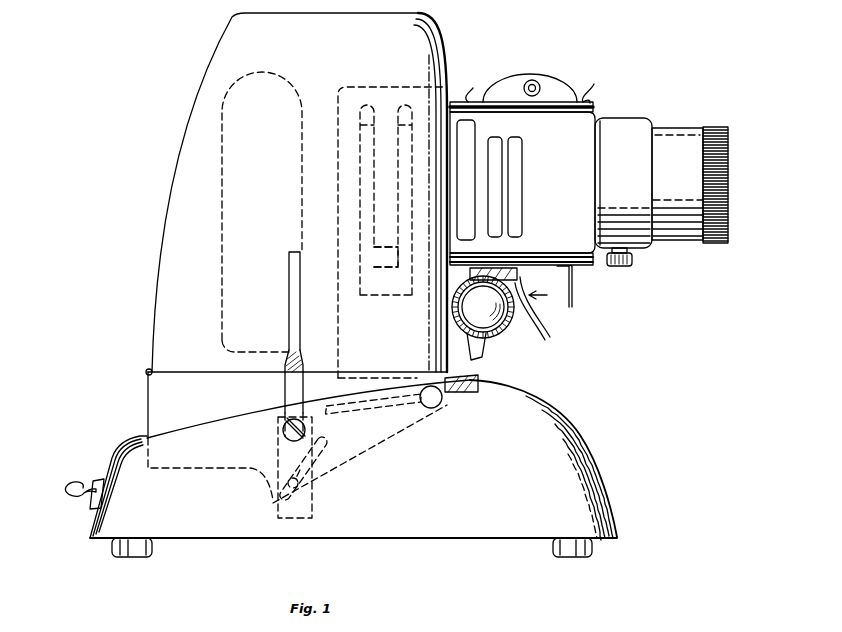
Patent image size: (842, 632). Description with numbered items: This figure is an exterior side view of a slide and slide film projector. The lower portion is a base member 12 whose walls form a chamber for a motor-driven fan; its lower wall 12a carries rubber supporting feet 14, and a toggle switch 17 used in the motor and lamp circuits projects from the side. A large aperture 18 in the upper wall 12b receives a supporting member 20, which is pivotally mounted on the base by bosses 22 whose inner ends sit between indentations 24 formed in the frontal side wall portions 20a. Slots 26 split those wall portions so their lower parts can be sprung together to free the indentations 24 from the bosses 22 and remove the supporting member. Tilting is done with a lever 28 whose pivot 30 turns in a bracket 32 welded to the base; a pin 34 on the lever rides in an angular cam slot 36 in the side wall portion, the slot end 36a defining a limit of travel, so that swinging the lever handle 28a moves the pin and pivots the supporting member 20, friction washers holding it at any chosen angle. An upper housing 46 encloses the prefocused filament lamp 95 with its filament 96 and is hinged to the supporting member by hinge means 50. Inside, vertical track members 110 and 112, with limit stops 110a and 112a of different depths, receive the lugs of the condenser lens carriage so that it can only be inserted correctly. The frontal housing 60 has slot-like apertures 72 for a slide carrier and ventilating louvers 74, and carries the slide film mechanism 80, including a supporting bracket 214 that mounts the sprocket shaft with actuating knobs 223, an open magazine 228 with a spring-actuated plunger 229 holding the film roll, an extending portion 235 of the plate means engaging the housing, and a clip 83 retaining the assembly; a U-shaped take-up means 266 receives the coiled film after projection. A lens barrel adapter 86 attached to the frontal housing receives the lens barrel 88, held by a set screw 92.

The base member 12 is at (277, 487).
The lower wall 12a is at (413, 541).
The upper wall 12b is at (557, 399).
The supporting feet 14 is at (594, 548).
The toggle switch 17 is at (74, 487).
The aperture 18 is at (143, 430).
The supporting member 20 is at (148, 394).
The frontal side wall portions 20a is at (388, 448).
The bosses 22 is at (443, 400).
The indentations 24 is at (470, 378).
The slots 26 is at (350, 406).
The lever 28 is at (284, 394).
The lever handle 28a is at (288, 283).
The pivot 30 is at (283, 434).
The bracket 32 is at (313, 512).
The pin 34 is at (302, 479).
The angular cam slot 36 is at (328, 448).
The slot end 36a is at (320, 457).
The upper housing 46 is at (157, 293).
The hinge means 50 is at (149, 370).
The frontal housing 60 is at (522, 183).
The slot-like apertures 72 is at (468, 240).
The louvers 74 is at (516, 216).
The slide film mechanism 80 is at (548, 295).
The clip 83 is at (590, 95).
The lens barrel adapter 86 is at (623, 183).
The lens barrel 88 is at (690, 185).
The set screw 92 is at (630, 263).
The prefocused filament lamp 95 is at (222, 156).
The filament 96 is at (260, 200).
The track member 110 is at (360, 110).
The limit stop 110a is at (378, 246).
The track member 112 is at (358, 149).
The limit stop 112a is at (385, 270).
The supporting bracket 214 is at (518, 277).
The actuating knobs 223 is at (505, 332).
The magazine 228 is at (550, 77).
The spring-actuated plunger 229 is at (525, 84).
The extending portion 235 is at (471, 87).
The take-up means 266 is at (572, 282).